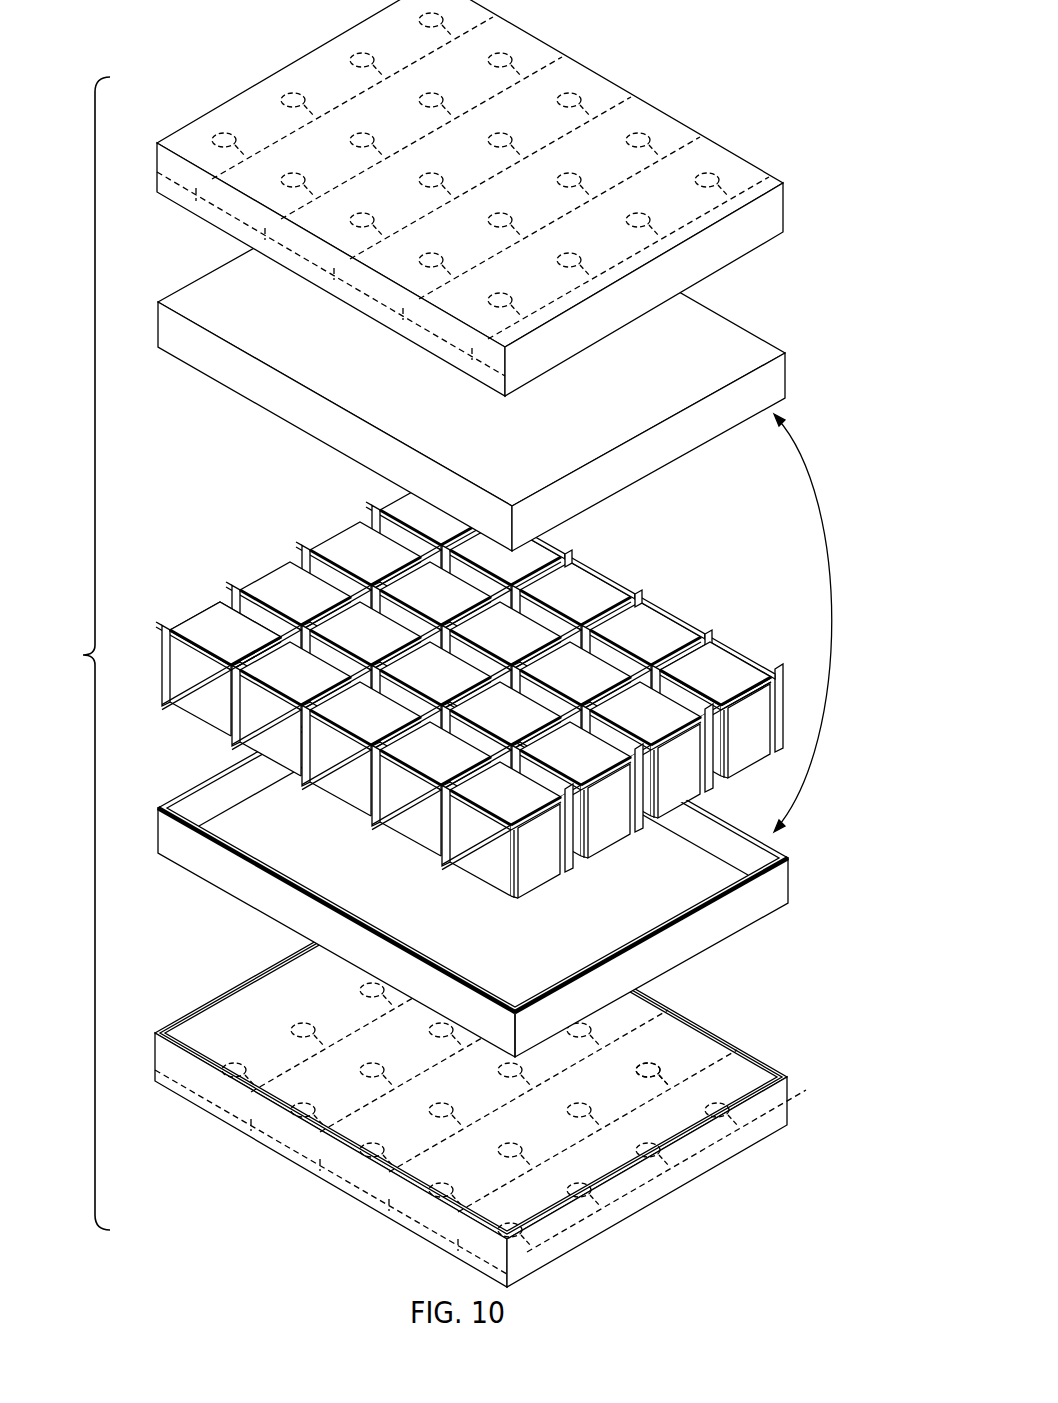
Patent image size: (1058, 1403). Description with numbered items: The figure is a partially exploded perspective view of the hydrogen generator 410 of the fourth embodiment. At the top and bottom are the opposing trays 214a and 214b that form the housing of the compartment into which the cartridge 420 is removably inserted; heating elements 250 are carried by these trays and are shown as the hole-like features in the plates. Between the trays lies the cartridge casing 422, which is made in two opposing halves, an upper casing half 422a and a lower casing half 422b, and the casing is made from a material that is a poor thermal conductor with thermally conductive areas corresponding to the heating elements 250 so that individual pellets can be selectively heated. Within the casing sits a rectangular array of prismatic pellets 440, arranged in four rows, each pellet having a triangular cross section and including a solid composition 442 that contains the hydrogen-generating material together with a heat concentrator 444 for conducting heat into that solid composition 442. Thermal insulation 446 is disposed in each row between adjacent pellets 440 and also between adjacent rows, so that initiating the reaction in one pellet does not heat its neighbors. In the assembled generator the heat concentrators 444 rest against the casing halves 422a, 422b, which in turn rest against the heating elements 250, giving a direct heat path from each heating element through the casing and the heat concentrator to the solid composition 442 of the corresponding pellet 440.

The tray 214a is at (620, 88).
The tray 214b is at (770, 1058).
The heating element 250 is at (648, 1070).
The hydrogen generator 410 is at (79, 653).
The cartridge 420 is at (458, 677).
The cartridge casing 422 is at (834, 630).
The casing half 422a is at (750, 325).
The casing half 422b is at (790, 868).
The pellet 440 is at (262, 563).
The solid composition 442 is at (592, 570).
The heat concentrator 444 is at (205, 622).
The thermal insulation 446 is at (193, 680).